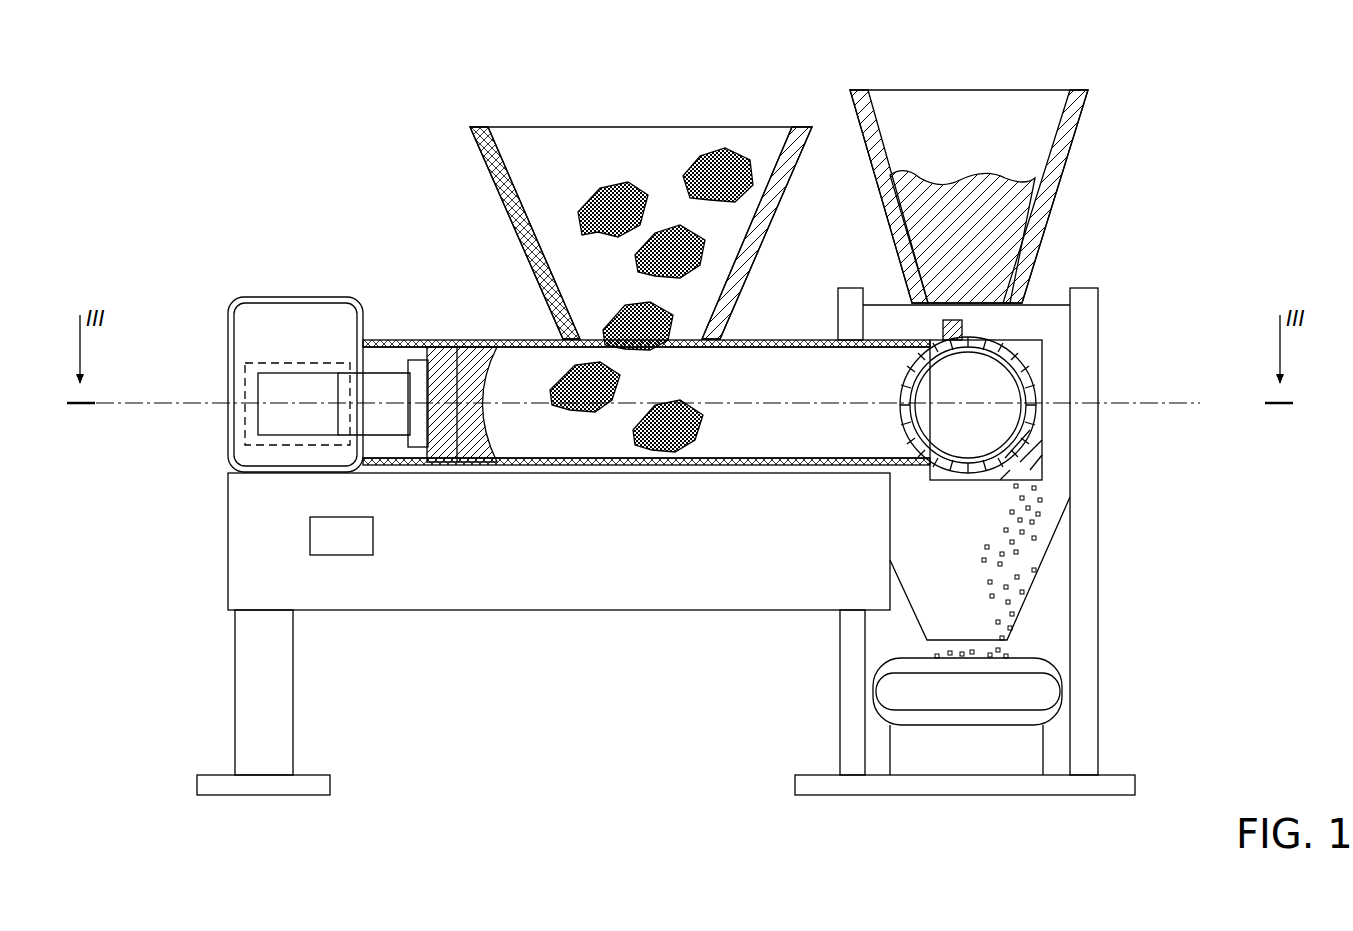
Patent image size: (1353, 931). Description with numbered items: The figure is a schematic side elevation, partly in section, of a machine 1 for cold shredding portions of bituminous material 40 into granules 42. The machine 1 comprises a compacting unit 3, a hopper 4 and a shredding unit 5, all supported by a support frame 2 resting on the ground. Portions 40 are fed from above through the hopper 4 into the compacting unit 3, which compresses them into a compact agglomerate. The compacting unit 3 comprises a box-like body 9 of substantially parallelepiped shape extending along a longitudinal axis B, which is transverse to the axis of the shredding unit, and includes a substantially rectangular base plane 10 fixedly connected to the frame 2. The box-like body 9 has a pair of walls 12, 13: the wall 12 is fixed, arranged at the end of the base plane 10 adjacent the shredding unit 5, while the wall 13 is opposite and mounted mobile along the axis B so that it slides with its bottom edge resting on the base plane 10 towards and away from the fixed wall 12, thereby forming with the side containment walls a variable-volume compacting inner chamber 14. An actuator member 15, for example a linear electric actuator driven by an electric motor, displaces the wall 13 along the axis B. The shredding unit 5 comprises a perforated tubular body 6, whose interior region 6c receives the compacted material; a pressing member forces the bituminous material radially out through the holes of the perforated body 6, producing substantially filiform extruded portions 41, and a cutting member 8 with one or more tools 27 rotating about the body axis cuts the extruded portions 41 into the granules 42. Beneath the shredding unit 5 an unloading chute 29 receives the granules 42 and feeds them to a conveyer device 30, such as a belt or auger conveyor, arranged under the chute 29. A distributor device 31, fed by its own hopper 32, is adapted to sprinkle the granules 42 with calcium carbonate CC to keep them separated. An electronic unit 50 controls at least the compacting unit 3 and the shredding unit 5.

The machine 1 is at (172, 165).
The support frame 2 is at (206, 630).
The compacting unit 3 is at (546, 562).
The hopper 4 is at (528, 146).
The shredding unit 5 is at (1045, 347).
The perforated tubular body 6 is at (1042, 418).
The ring chamber 6c is at (1035, 368).
The cutting member 8 is at (928, 334).
The box-like body 9 is at (778, 365).
The base plane 10 is at (736, 458).
The wall 12 is at (1024, 354).
The wall 13 is at (468, 360).
The compacting inner chamber 14 is at (812, 430).
The actuator member 15 is at (280, 365).
The tool 27 is at (1012, 344).
The unloading chute 29 is at (1025, 598).
The conveyer device 30 is at (1045, 692).
The distributor device 31 is at (1016, 180).
The hopper for additive 32 is at (862, 106).
The portions of bituminous material 40 is at (668, 250).
The extruded portions 41 is at (1037, 450).
The granules 42 is at (1037, 513).
The electronic unit 50 is at (341, 536).
The longitudinal axis B is at (185, 403).
The calcium carbonate CC is at (1010, 215).